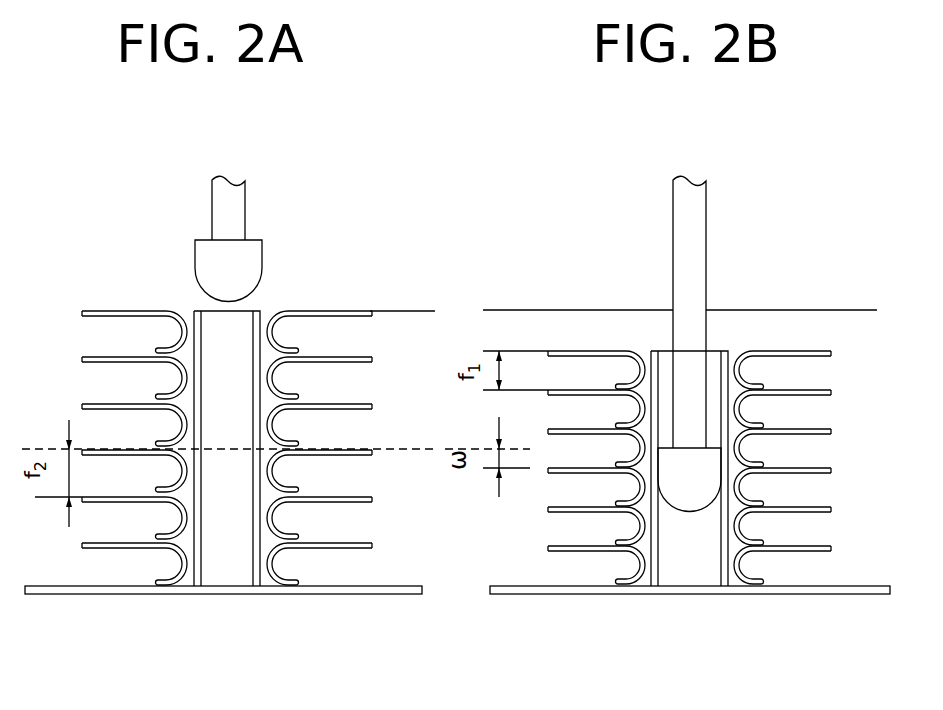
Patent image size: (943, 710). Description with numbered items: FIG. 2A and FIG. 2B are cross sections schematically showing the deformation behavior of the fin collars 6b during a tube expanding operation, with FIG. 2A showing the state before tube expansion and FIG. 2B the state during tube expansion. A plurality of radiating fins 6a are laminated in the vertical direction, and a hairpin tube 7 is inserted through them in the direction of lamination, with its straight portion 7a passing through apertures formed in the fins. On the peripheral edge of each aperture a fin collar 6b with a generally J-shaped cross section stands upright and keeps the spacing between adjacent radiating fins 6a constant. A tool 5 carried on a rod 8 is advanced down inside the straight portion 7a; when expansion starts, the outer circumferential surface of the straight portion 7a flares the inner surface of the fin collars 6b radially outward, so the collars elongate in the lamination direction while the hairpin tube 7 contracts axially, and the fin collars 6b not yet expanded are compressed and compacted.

In FIG. 2A, the tip of ultrasonic horn / pressing tool 5 is at (264, 258).
In FIG. 2B, the tip of ultrasonic horn / pressing tool 5 is at (688, 515).
In FIG. 2A, the radiating fin 6a is at (198, 417).
In FIG. 2B, the radiating fin 6a is at (716, 415).
In FIG. 2A, the fin collar 6b is at (155, 345).
In FIG. 2B, the fin collar 6b is at (748, 382).
In FIG. 2A, the hairpin tube 7 is at (250, 468).
In FIG. 2B, the hairpin tube 7 is at (701, 458).
In FIG. 2A, the straight portion 7a is at (205, 562).
In FIG. 2B, the straight portion 7a is at (672, 562).
In FIG. 2A, the rod / shaft 8 is at (248, 205).
In FIG. 2B, the rod / shaft 8 is at (708, 205).